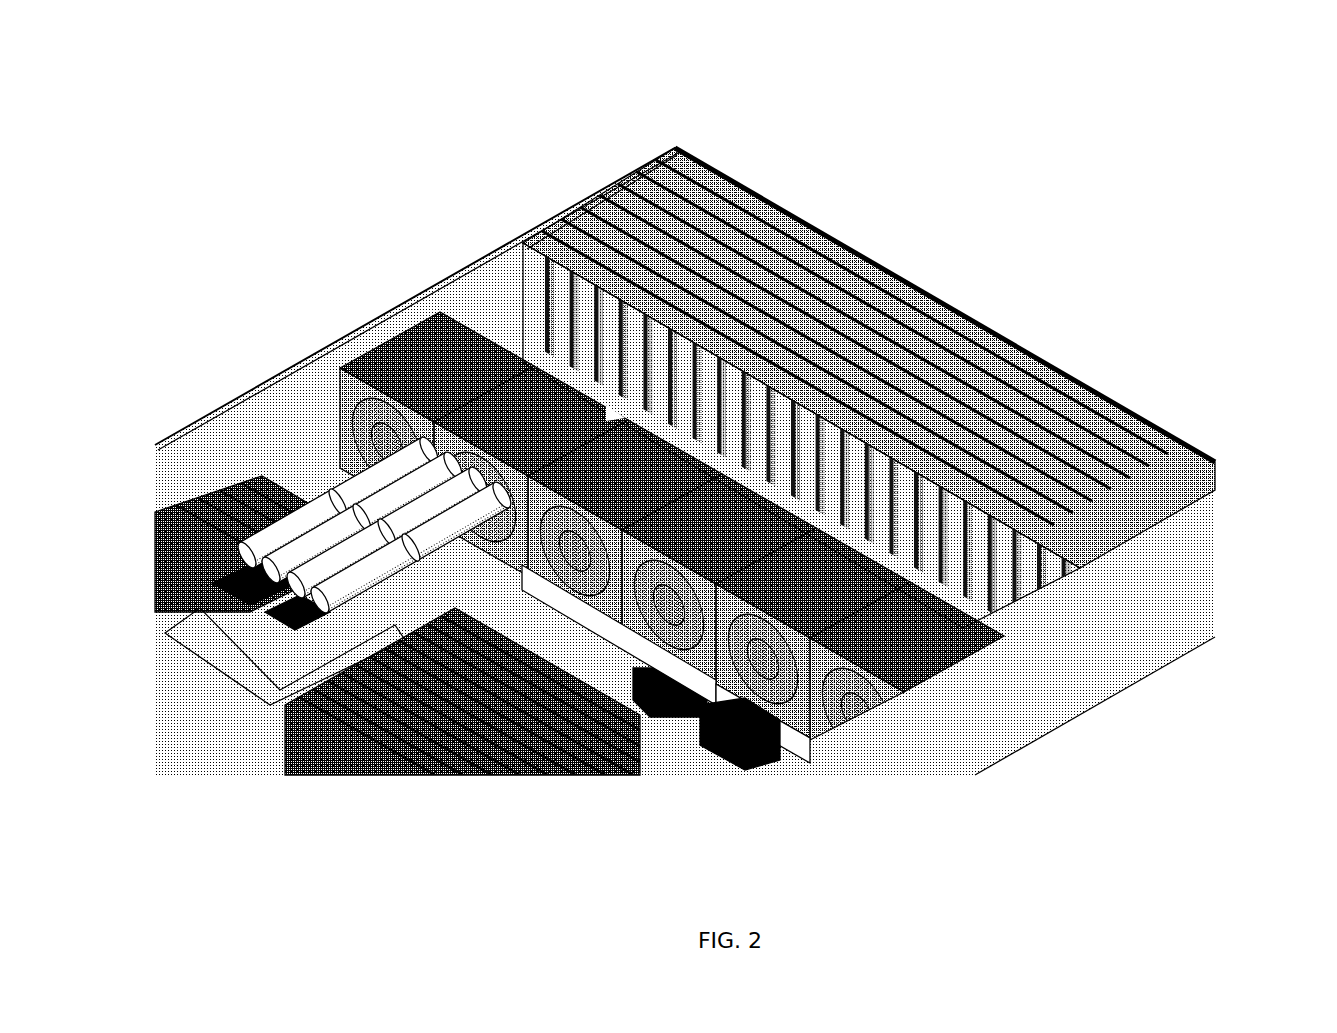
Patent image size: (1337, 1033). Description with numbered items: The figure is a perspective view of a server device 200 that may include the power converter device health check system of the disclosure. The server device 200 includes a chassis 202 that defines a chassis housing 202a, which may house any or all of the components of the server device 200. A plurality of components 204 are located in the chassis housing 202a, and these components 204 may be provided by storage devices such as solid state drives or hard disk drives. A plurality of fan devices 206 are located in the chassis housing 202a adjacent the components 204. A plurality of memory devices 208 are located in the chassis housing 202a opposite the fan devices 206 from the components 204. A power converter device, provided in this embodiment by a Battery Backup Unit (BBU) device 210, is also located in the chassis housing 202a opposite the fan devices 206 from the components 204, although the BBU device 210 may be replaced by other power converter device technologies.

The server device 200 is at (684, 461).
The chassis 202 is at (644, 471).
The chassis housing 202a is at (233, 423).
The components 204 is at (773, 210).
The fan devices 206 is at (545, 393).
The memory devices 208 is at (165, 545).
The Battery Backup Unit (BBU) device 210 is at (312, 492).